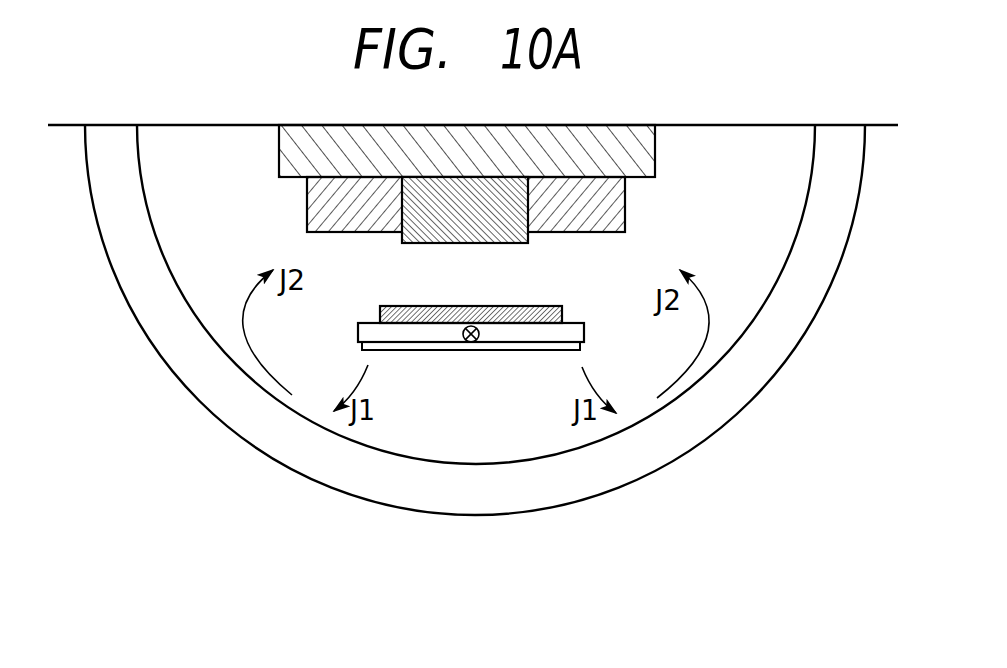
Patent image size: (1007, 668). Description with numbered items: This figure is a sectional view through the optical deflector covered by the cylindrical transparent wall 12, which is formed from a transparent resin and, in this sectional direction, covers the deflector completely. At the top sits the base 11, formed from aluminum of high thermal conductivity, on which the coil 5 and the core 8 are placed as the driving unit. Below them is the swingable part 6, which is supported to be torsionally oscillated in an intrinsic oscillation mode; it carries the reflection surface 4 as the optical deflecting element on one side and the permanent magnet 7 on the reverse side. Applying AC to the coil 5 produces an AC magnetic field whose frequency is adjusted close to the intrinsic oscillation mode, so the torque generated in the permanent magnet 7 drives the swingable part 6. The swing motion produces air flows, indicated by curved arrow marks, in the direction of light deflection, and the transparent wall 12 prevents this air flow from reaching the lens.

The reflection surface 4 is at (508, 350).
The coil 5 is at (617, 209).
The swingable part 6 is at (585, 334).
The permanent magnet 7 is at (546, 306).
The core 8 is at (474, 244).
The base 11 is at (647, 157).
The transparent wall 12 is at (787, 360).